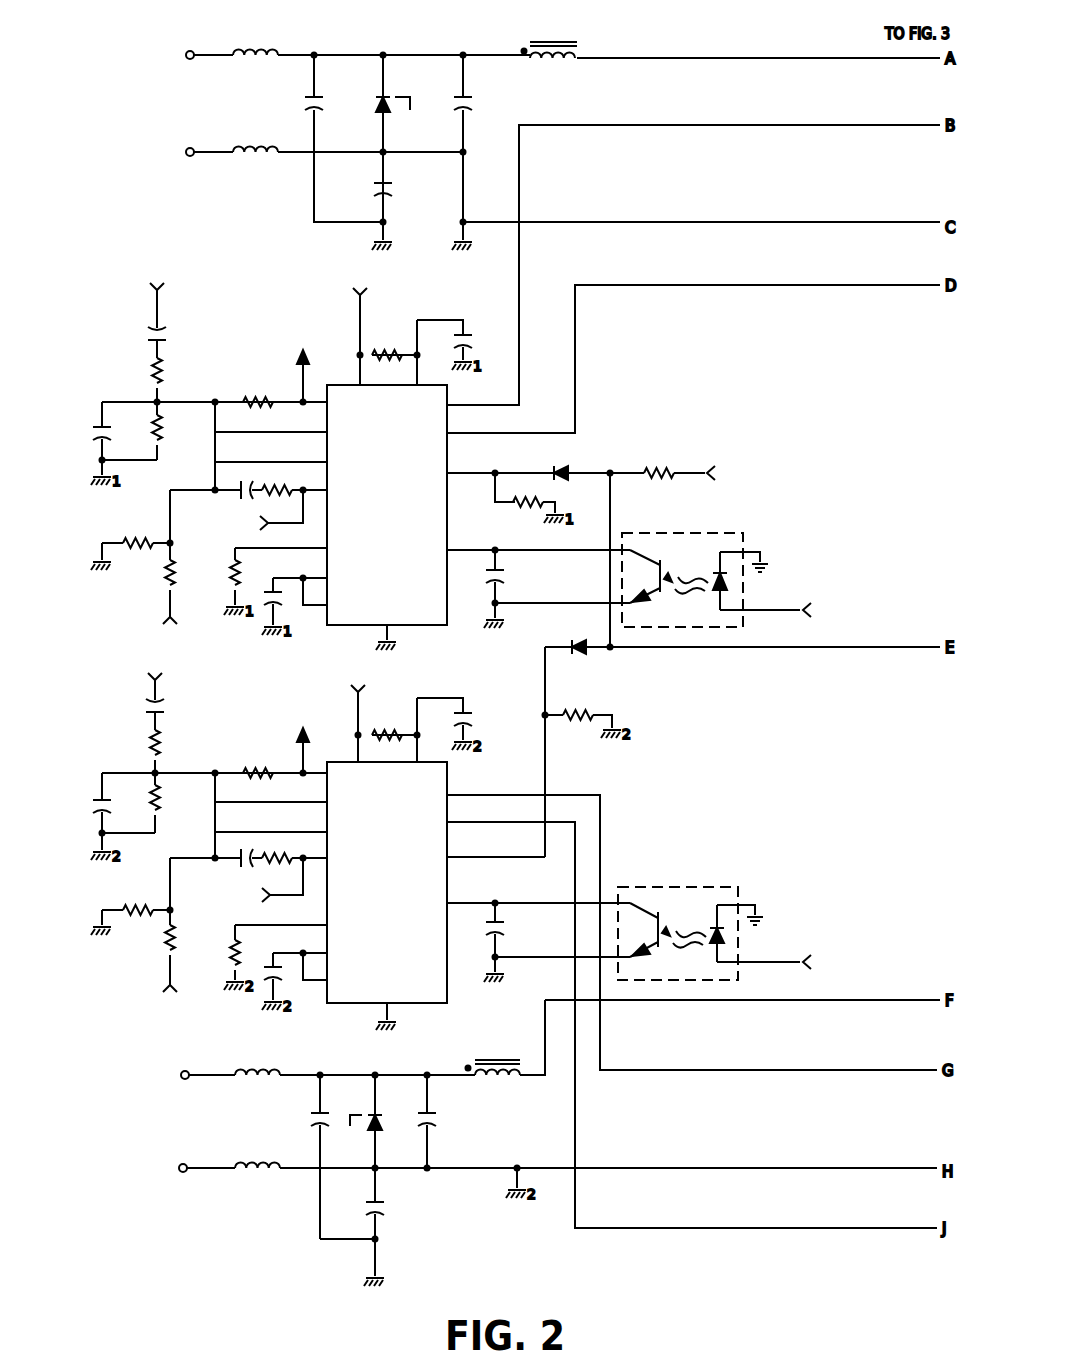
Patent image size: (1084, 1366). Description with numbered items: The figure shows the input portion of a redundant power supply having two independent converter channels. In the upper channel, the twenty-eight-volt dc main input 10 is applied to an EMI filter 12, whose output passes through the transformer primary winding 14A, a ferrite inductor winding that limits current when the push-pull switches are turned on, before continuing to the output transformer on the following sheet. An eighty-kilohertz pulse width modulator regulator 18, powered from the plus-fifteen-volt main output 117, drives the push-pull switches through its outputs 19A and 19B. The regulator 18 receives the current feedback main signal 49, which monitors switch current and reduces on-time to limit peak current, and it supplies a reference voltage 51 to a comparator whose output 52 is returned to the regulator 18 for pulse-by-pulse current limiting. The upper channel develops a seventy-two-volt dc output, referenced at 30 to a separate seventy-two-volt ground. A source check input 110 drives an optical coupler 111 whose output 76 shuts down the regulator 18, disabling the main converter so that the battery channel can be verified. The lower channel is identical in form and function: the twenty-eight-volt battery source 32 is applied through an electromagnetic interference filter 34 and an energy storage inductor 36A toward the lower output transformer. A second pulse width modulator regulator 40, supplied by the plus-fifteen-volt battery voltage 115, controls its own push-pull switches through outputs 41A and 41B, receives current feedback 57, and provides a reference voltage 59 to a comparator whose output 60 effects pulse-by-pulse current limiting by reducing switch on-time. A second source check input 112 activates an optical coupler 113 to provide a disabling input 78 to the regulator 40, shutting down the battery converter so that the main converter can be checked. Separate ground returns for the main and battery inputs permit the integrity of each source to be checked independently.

The 28-volt dc main input 10 is at (148, 104).
The EMI filter 12 is at (398, 21).
The transformer L3 primary winding 14A is at (553, 35).
The pulse width modulator regulator 18 is at (398, 574).
The output of pulse width modulator regulator 19A is at (519, 266).
The output of pulse width modulator regulator 19B is at (575, 340).
The 72-volt dc output 30 is at (168, 609).
The 28-volt dc battery source 32 is at (145, 1127).
The electromagnetic interference filter 34 is at (425, 1210).
The energy storage inductor 36A is at (494, 1046).
The pulse width modulator regulator 40 is at (400, 944).
The U2 output A line 41A is at (600, 1038).
The U2 output B line 41B is at (575, 1128).
The first control output CFBM 49 is at (160, 308).
The reference voltage 51 is at (302, 377).
The comparator output 52 is at (302, 518).
The current feedback 57 is at (153, 691).
The reference voltage 59 is at (298, 757).
The comparator output 60 is at (305, 890).
The output of optical coupler 76 is at (465, 554).
The disabling input 78 is at (465, 908).
The source check input 110 is at (781, 608).
The optical coupler 111 is at (681, 532).
The source check input 112 is at (777, 955).
The optical coupler 113 is at (679, 879).
The +15-volt battery voltage 115 is at (689, 465).
The +15-volt main output 117 is at (358, 315).